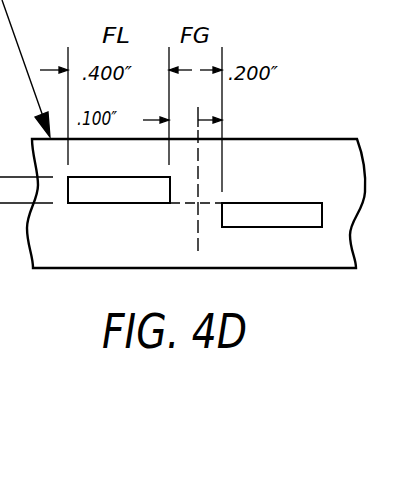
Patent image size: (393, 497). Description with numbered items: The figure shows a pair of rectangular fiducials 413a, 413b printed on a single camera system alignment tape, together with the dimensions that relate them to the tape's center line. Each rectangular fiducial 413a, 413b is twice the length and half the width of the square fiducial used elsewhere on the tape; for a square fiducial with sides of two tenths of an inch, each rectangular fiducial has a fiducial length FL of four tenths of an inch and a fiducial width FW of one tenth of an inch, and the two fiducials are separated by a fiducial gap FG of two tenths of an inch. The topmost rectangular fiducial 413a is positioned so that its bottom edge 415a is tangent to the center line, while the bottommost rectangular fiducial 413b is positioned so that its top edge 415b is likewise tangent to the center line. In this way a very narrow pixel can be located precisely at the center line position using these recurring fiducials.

The rectangular fiducial 413a is at (110, 192).
The bottom edge 415a is at (123, 203).
The rectangular fiducial 413b is at (265, 215).
The top edge 415b is at (287, 203).